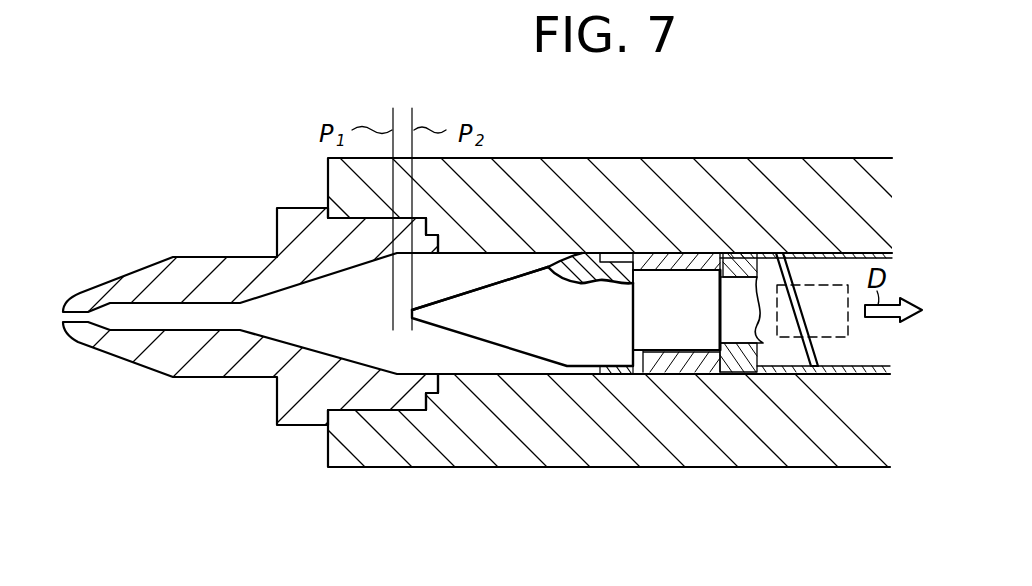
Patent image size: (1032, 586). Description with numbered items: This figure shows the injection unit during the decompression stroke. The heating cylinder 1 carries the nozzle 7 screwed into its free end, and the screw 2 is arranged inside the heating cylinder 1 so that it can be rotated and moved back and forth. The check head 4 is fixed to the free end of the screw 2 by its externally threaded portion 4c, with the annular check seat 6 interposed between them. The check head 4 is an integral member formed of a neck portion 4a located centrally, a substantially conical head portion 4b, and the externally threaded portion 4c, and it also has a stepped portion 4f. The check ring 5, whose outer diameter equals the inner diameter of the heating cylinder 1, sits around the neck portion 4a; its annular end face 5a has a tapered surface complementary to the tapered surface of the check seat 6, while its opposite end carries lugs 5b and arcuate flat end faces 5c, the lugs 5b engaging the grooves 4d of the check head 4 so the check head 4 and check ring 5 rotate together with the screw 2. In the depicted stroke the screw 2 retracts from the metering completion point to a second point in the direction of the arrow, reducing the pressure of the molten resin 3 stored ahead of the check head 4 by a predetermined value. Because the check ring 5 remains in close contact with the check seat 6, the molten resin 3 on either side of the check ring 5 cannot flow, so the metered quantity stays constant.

The heating cylinder 1 is at (873, 466).
The screw 2 is at (878, 373).
The molten resin 3 is at (869, 250).
The check head 4 is at (652, 319).
The neck portion 4a is at (693, 283).
The head portion 4b is at (527, 294).
The externally threaded portion 4c is at (820, 258).
The grooves 4d is at (601, 262).
The stepped portion 4f is at (637, 316).
The check ring 5 is at (688, 321).
The annular end face 5a is at (725, 375).
The lugs 5b is at (651, 252).
The arcuate flat end faces 5c is at (653, 375).
The check seat 6 is at (762, 373).
The nozzle 7 is at (147, 263).